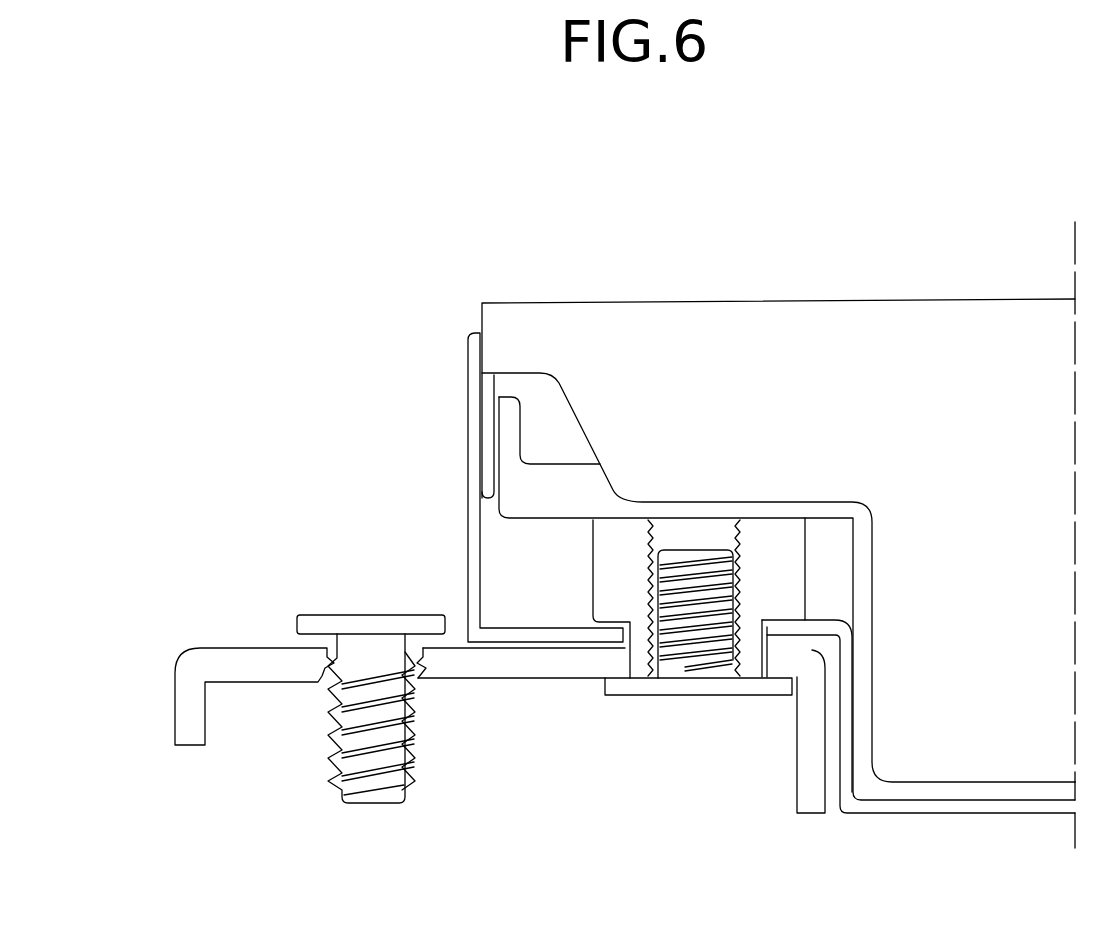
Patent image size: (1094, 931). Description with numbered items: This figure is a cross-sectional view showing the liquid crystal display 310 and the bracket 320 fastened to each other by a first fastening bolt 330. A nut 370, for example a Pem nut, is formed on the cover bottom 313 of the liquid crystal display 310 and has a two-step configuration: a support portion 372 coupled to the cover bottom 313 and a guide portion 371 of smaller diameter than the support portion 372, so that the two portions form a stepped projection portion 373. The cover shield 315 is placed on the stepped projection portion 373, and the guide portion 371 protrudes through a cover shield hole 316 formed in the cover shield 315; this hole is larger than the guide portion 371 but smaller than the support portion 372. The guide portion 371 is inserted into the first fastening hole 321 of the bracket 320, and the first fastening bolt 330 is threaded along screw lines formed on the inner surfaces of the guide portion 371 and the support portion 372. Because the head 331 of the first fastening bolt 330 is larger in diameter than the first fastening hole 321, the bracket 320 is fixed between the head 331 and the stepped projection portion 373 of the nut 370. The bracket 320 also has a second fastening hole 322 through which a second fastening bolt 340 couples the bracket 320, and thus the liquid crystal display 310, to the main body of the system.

The liquid crystal display 310 is at (480, 308).
The cover bottom 313 is at (818, 503).
The cover shield 315 is at (468, 475).
The cover shield hole 316 is at (588, 623).
The bracket 320 is at (161, 712).
The first fastening hole 321 is at (620, 660).
The second fastening hole 322 is at (418, 684).
The first fastening bolt 330 is at (679, 715).
The head 331 is at (763, 683).
The second fastening bolt 340 is at (343, 593).
The nut 370 is at (592, 565).
The guide portion 371 is at (752, 664).
The support portion 372 is at (775, 550).
The stepped projection portion 373 is at (773, 620).